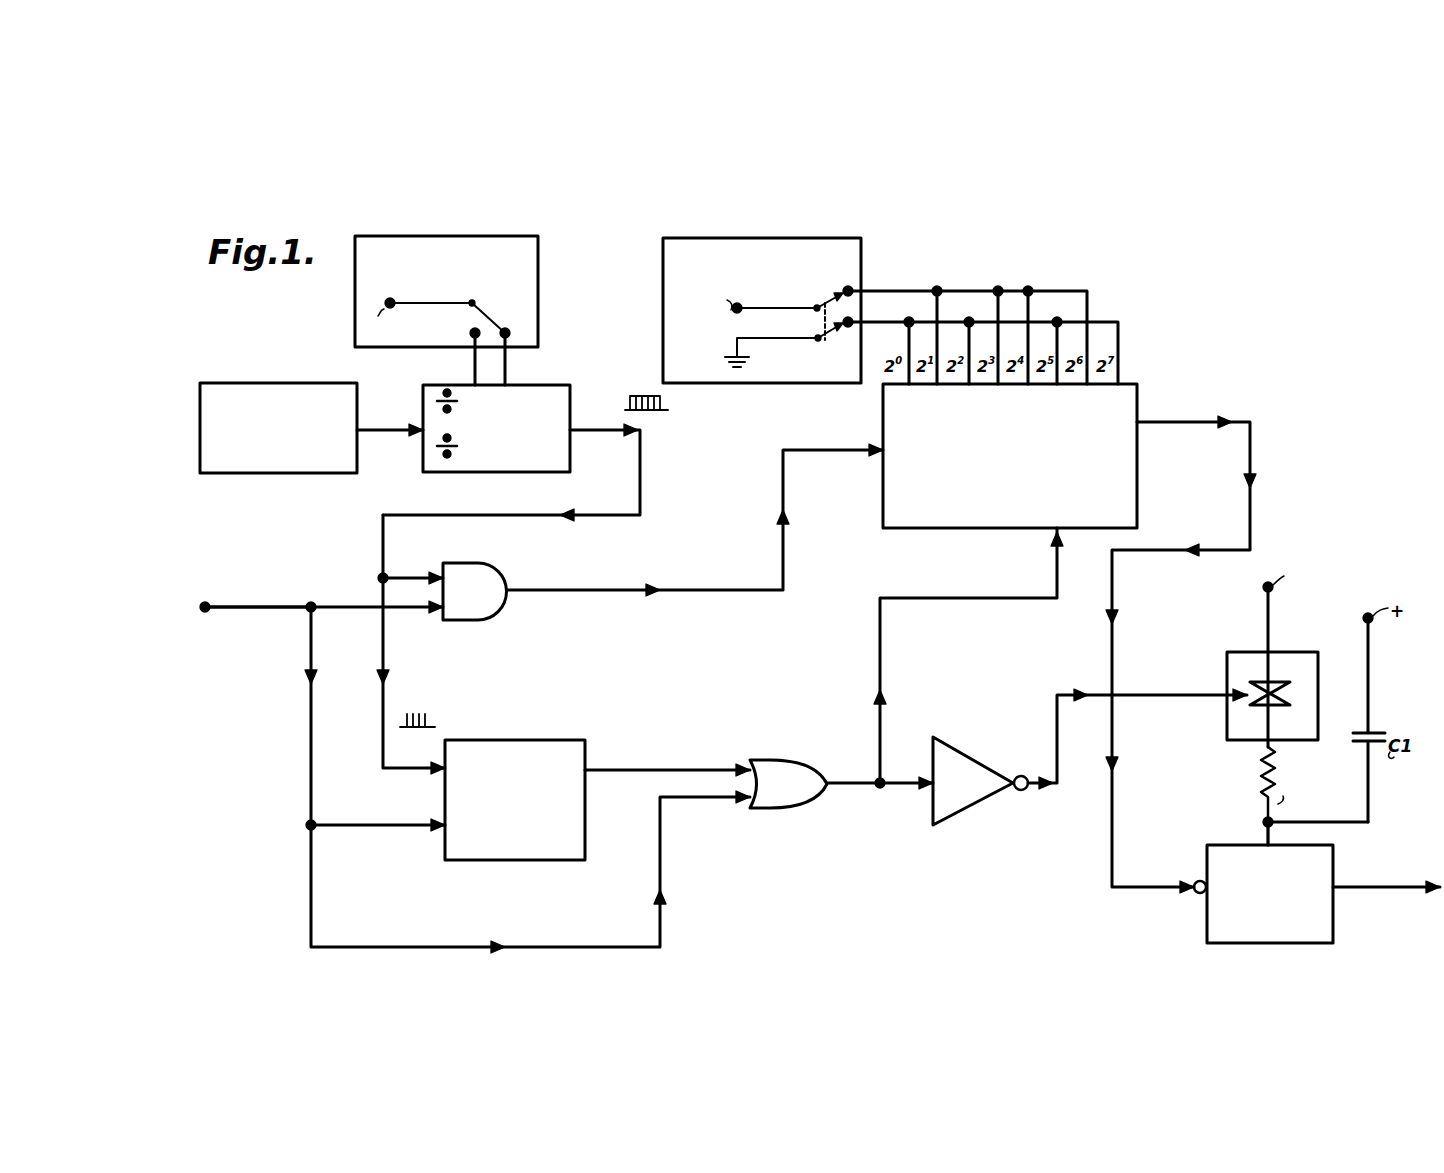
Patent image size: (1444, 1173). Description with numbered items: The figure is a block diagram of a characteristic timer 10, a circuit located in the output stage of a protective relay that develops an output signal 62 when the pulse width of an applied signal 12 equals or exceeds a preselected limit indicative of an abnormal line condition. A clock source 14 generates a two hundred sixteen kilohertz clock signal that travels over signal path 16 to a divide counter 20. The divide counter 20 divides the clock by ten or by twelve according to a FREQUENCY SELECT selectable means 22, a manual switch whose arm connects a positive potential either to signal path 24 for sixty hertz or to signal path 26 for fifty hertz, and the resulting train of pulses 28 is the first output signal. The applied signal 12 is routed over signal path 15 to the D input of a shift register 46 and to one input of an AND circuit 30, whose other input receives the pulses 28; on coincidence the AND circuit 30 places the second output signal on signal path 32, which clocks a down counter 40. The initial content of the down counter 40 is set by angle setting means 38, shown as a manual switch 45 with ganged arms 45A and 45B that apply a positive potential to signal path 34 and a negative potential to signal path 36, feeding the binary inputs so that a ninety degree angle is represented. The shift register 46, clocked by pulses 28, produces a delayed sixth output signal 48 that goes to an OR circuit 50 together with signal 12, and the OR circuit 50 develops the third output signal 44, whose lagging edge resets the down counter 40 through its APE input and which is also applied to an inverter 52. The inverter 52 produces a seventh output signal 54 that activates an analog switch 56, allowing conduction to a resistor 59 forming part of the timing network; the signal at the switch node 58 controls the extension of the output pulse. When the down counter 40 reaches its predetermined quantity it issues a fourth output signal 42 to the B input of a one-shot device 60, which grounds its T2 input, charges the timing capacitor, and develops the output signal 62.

The characteristic timer 10 is at (1308, 353).
The applied signal 12 is at (230, 607).
The clock source 14 is at (282, 383).
The signal path 15 is at (262, 609).
The signal path 16 is at (380, 430).
The divide counter 20 is at (570, 389).
The selectable means 22 is at (538, 259).
The signal path 24 is at (508, 368).
The signal path 26 is at (472, 367).
The train of pulses 28 is at (668, 406).
The AND circuit 30 is at (483, 563).
The signal path 32 is at (603, 590).
The signal path 34 is at (1075, 291).
The signal path 36 is at (1108, 322).
The angle setting means 38 is at (861, 256).
The down counter 40 is at (1138, 484).
The fourth output signal 42 is at (1217, 385).
The third output signal 44 is at (1055, 572).
The manual type switch 45 is at (735, 321).
The arm 45A is at (820, 300).
The arm 45B is at (825, 352).
The shift register 46 is at (570, 740).
The sixth output signal 48 is at (667, 767).
The OR circuit 50 is at (790, 760).
The inverter 52 is at (958, 742).
The seventh output signal 54 is at (1196, 693).
The analog switch 56 is at (1310, 641).
The trigger pulse 58 is at (1267, 833).
The resistor R1 59 is at (1262, 748).
The one-shot device 60 is at (1207, 927).
The output signal 62 is at (1368, 885).